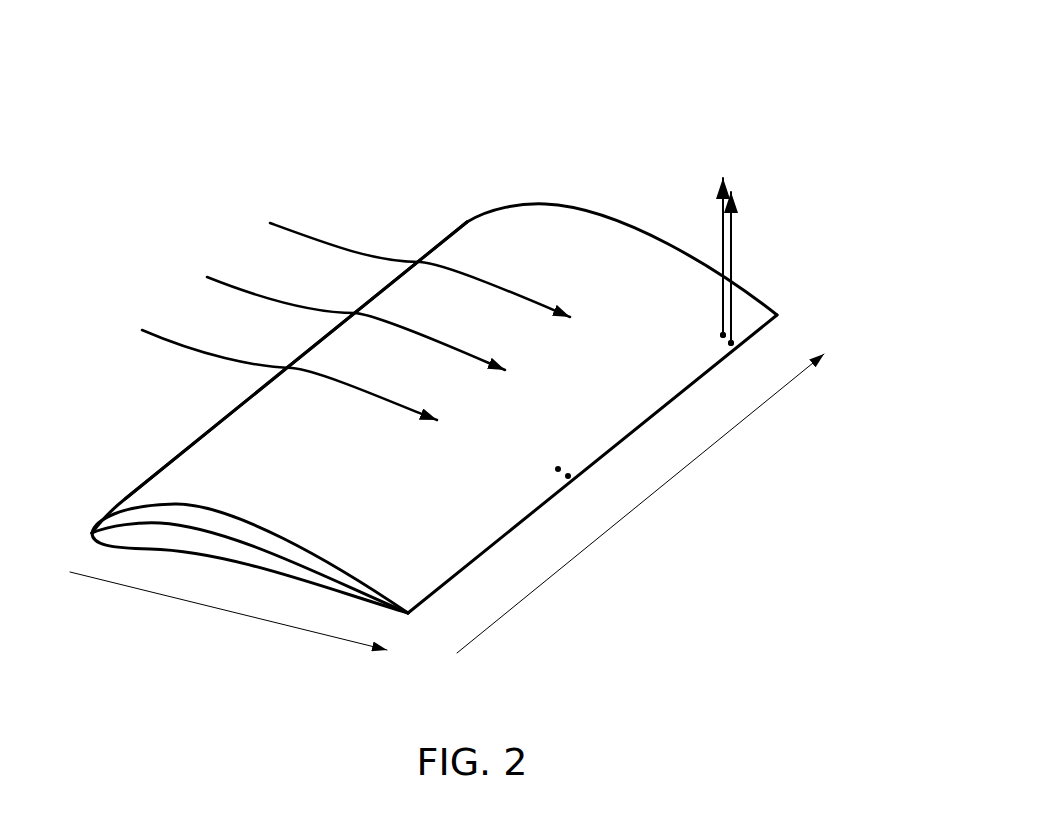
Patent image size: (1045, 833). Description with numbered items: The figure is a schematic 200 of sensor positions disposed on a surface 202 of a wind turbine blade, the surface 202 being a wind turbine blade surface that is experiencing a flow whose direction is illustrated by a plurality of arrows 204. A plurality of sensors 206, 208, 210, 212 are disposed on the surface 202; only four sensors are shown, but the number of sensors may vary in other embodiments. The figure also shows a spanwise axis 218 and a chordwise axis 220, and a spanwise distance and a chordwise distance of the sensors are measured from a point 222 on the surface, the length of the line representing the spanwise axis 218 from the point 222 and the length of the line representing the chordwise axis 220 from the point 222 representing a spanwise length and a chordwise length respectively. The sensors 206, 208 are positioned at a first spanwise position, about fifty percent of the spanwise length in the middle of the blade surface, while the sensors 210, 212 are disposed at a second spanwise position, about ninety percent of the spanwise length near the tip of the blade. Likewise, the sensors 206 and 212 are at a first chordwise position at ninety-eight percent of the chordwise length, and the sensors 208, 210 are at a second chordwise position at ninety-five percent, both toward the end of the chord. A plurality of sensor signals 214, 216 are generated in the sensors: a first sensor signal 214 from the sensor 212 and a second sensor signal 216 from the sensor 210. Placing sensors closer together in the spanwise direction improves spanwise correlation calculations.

The schematic 200 is at (795, 80).
The surface 202 is at (369, 434).
The arrows 204 is at (223, 283).
The sensor 206 is at (571, 479).
The sensor 208 is at (558, 472).
The sensor 210 is at (723, 338).
The sensor 212 is at (733, 346).
The first sensor signal 214 is at (733, 240).
The second sensor signal 216 is at (720, 221).
The spanwise axis 218 is at (683, 468).
The chordwise axis 220 is at (242, 617).
The point 222 is at (143, 480).